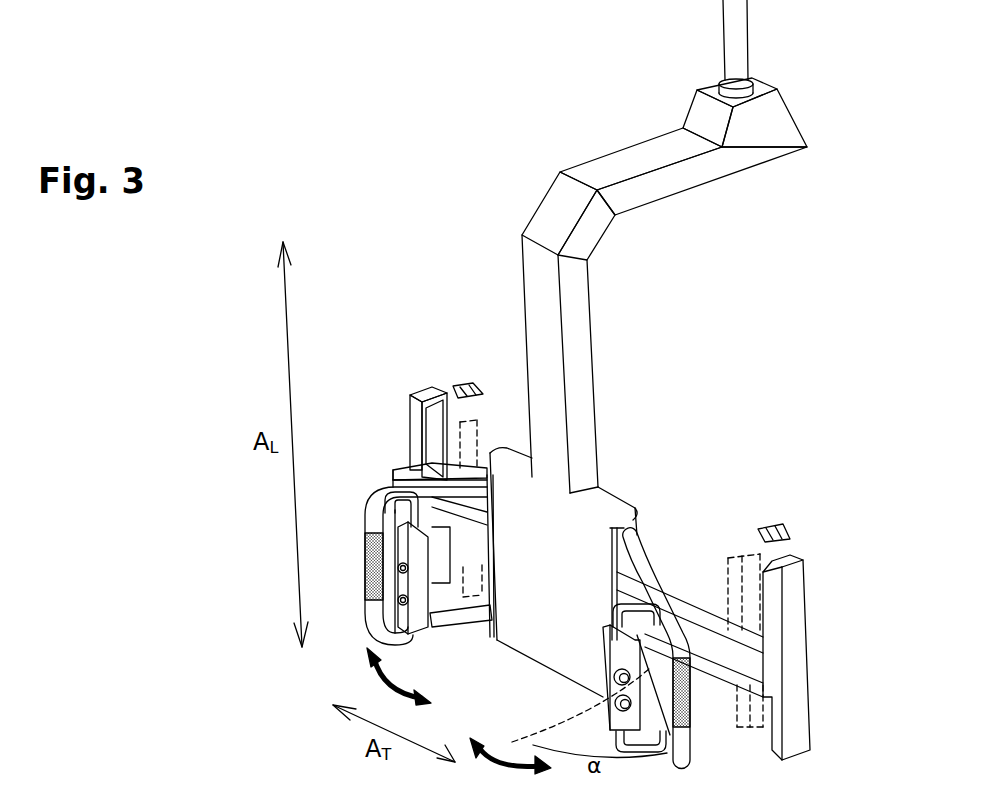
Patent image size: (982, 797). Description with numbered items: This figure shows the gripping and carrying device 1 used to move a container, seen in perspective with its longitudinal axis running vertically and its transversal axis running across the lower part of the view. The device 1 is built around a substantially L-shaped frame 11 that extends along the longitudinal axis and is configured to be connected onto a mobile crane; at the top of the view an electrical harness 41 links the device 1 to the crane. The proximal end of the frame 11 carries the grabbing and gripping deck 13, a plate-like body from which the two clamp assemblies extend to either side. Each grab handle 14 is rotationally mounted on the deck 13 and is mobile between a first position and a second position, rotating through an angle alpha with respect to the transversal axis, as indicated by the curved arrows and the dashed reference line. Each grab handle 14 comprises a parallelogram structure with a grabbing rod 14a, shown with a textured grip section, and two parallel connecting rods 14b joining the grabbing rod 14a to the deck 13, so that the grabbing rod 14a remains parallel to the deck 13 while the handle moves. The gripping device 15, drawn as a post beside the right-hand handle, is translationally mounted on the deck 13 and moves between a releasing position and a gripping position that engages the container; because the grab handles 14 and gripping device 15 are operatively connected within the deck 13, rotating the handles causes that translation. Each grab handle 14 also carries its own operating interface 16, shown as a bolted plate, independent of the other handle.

The gripping and carrying device 1 is at (490, 188).
The frame 11 is at (578, 347).
The grabbing and gripping deck 13 is at (560, 655).
The grab handles 14 is at (690, 763).
The grabbing rod 14a is at (373, 563).
The connecting rods 14b is at (400, 484).
The gripping device 15 is at (800, 706).
The operating interface 16 is at (618, 660).
The electrical harness 41 is at (748, 13).